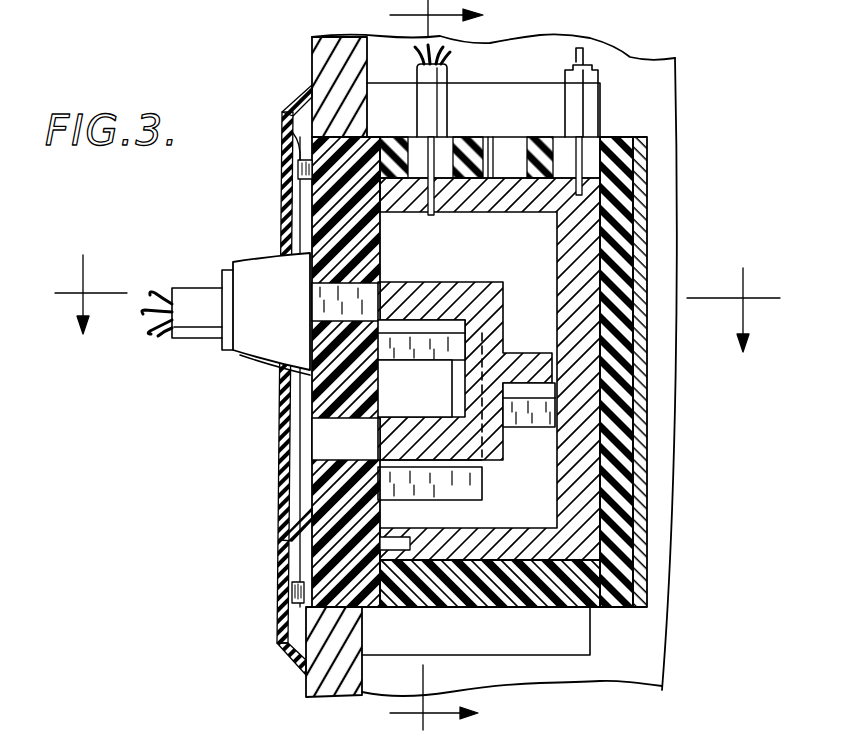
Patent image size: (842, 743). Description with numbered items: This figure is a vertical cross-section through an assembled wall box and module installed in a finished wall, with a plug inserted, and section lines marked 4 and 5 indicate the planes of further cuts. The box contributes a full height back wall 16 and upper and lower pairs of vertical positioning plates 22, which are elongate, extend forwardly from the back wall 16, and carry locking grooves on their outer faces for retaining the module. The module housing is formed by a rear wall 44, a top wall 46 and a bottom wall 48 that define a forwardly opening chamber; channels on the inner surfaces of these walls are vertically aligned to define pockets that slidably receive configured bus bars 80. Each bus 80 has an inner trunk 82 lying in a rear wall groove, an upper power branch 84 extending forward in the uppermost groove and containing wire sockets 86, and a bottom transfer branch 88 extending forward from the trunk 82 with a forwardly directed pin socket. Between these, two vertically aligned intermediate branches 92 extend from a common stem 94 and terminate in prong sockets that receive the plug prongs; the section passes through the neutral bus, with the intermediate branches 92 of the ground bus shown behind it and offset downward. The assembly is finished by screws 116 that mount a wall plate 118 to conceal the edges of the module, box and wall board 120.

The back wall 16 is at (647, 378).
The vertical positioning plates 22 is at (520, 78).
The rear wall 44 is at (625, 434).
The top wall 46 is at (480, 134).
The bottom wall 48 is at (588, 612).
The bus bar 80 is at (604, 215).
The inner trunk 82 is at (559, 499).
The upper power branch 84 is at (452, 214).
The wire sockets 86 is at (513, 200).
The bottom transfer branch 88 is at (422, 612).
The intermediate branches 92 is at (411, 333).
The common stem 94 is at (517, 387).
The screws 116 is at (284, 137).
The wall plate 118 is at (284, 207).
The wall board 120 is at (312, 55).
The section line 4- 4 is at (417, 322).
The section line 5- 5 is at (447, 367).